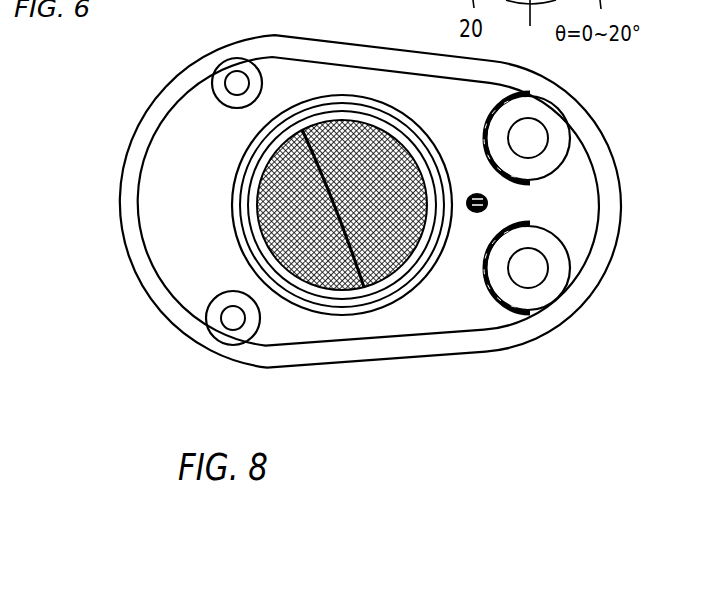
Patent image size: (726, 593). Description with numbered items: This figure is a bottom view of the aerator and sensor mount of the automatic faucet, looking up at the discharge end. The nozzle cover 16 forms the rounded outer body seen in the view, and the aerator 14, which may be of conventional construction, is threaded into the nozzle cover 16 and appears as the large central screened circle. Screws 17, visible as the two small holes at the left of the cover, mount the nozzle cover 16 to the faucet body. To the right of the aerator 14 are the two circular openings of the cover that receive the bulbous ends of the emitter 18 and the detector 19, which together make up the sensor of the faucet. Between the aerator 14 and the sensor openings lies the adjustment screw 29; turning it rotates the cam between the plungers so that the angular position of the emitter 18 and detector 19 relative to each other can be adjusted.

The aerator 14 is at (363, 285).
The nozzle cover 16 is at (621, 202).
The screws 17 is at (238, 83).
The emitter 18 is at (537, 136).
The detector 19 is at (540, 271).
The adjustment screw 29 is at (477, 213).